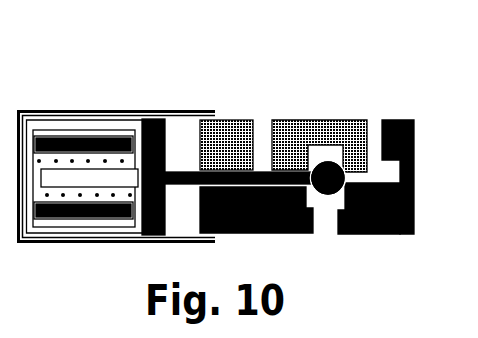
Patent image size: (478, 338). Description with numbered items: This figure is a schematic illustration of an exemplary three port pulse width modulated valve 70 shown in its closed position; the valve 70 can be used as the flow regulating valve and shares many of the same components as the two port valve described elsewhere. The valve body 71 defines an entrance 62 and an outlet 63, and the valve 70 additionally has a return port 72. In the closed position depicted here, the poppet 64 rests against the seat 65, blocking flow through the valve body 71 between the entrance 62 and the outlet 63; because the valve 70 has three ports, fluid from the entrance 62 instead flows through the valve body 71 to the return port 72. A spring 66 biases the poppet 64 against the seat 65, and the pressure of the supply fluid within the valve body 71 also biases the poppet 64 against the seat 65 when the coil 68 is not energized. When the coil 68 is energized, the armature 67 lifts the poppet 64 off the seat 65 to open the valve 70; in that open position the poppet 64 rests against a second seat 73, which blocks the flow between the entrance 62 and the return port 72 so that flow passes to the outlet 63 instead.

The three port PWM valve 70 is at (106, 82).
The armature 67 is at (90, 178).
The spring 66 is at (113, 196).
The coil 68 is at (63, 208).
The return port 72 is at (263, 130).
The seat 65 is at (342, 164).
The valve body 71 is at (353, 132).
The outlet 63 is at (378, 128).
The second seat 73 is at (307, 188).
The entrance 62 is at (327, 194).
The poppet 64 is at (330, 194).